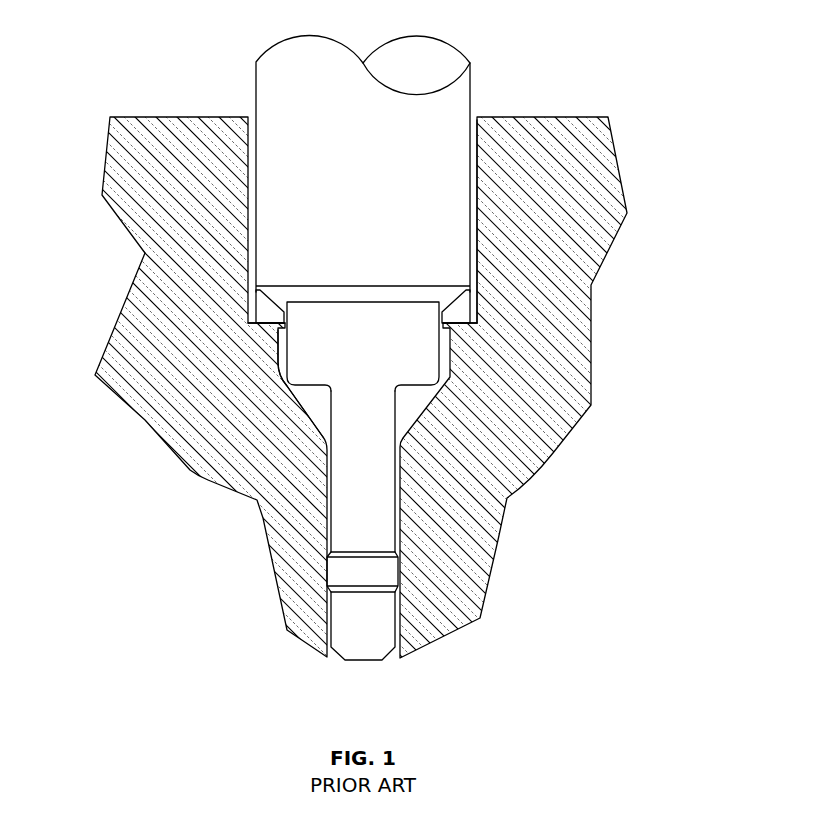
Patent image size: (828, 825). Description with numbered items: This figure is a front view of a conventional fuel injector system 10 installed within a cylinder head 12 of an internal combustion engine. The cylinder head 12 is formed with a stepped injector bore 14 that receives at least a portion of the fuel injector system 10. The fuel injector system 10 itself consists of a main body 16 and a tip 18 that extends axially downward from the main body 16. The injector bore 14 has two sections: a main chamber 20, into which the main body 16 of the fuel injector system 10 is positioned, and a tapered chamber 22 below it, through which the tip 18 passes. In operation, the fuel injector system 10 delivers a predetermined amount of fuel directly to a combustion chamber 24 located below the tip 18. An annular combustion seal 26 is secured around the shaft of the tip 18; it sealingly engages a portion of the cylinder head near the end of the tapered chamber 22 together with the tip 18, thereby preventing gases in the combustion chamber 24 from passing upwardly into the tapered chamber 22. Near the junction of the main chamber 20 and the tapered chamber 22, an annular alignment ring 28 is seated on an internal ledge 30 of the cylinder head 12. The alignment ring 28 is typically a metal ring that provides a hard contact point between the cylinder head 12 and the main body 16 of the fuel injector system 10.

The fuel injector system 10 is at (322, 369).
The cylinder head 12 is at (623, 137).
The stepped injector bore 14 is at (252, 108).
The main body 16 is at (448, 132).
The tip 18 is at (380, 505).
The main chamber 20 is at (470, 205).
The tapered chamber 22 is at (283, 367).
The combustion chamber 24 is at (367, 662).
The annular combustion seal 26 is at (340, 572).
The annular alignment ring 28 is at (258, 322).
The internal ledge 30 is at (270, 323).